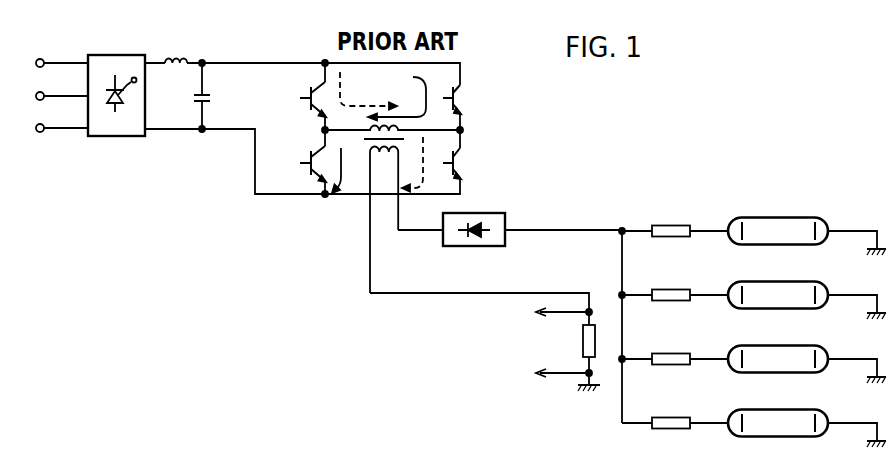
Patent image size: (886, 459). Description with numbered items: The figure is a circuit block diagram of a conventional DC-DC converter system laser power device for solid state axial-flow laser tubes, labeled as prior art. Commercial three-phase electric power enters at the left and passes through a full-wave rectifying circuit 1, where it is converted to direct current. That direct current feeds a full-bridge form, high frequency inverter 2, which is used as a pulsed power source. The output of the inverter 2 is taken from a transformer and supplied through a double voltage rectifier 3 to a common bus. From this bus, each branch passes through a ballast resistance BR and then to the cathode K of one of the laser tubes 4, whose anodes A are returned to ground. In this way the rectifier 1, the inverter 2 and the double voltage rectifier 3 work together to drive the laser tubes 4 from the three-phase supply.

The full-wave rectifying circuit 1 is at (112, 136).
The high frequency inverter 2 is at (461, 93).
The double voltage rectifier 3 is at (505, 213).
The laser tubes 4 is at (790, 218).